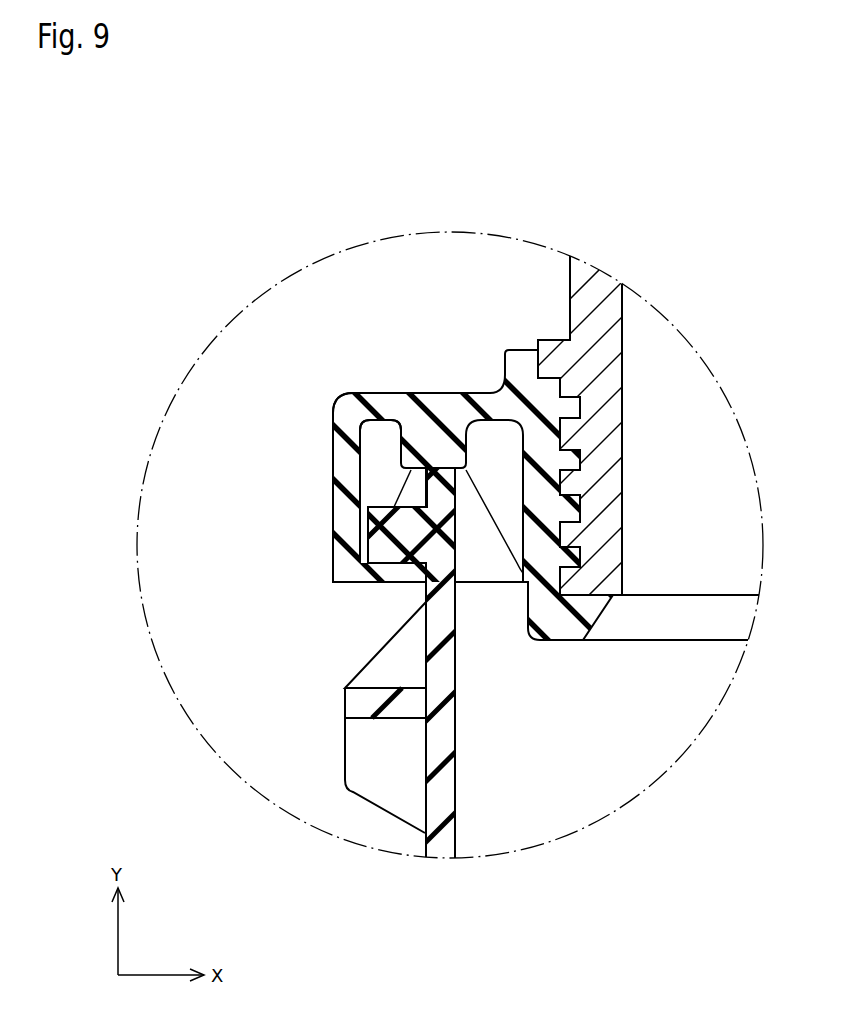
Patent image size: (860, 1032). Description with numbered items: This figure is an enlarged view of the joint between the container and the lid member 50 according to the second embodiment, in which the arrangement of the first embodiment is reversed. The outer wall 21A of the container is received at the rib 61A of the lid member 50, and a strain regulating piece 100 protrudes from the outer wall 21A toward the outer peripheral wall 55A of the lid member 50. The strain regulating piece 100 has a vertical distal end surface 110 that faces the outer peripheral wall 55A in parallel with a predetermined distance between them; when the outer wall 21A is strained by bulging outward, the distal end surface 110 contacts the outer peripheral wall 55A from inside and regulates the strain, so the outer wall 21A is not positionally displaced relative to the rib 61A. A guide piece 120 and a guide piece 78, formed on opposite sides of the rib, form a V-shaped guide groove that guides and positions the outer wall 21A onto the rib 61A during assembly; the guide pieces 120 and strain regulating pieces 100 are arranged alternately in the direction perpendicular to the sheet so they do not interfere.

The lid member 50 is at (380, 384).
The rib 61A is at (440, 450).
The guide piece 120 is at (377, 440).
The outer peripheral wall 55A is at (345, 470).
The distal end surface 110 is at (340, 548).
The strain regulating piece 100 is at (392, 550).
The guide piece 78 is at (505, 528).
The outer wall 21A is at (442, 746).